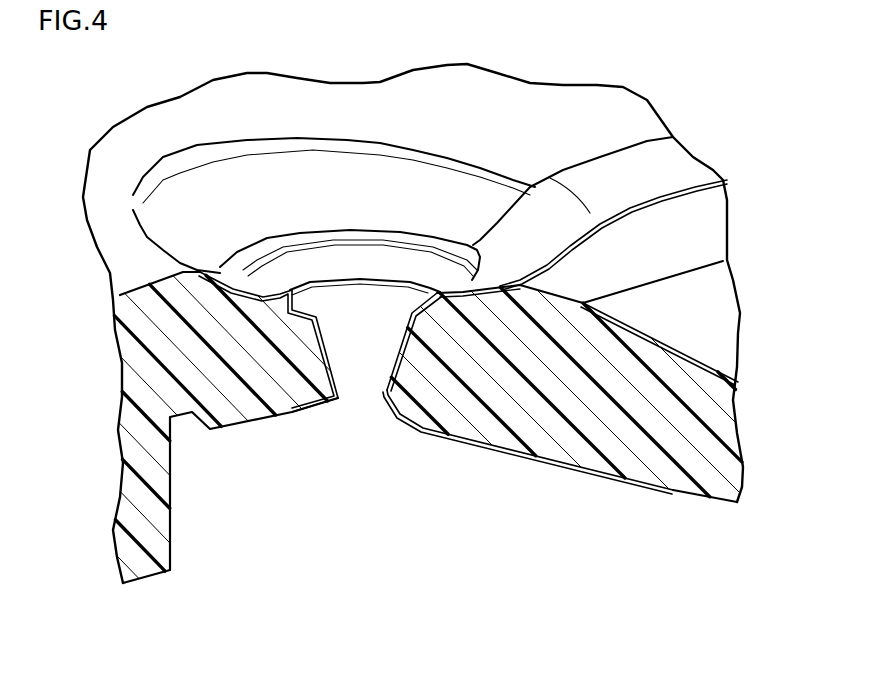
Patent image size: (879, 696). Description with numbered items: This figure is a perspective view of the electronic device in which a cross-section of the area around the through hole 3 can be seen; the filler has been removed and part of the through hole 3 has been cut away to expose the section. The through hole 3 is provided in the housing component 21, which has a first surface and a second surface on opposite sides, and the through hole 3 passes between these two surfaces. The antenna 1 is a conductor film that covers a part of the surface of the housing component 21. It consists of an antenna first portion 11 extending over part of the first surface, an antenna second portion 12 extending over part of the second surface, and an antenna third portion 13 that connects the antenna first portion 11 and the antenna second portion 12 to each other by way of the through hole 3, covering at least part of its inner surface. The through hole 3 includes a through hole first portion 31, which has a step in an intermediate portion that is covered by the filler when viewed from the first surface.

The antenna 1 is at (797, 212).
The antenna first portion 11 is at (645, 180).
The antenna second portion 12 is at (603, 480).
The antenna third portion 13 is at (407, 353).
The housing component 21 is at (143, 368).
The through hole 3 is at (378, 202).
The through hole first portion 31 is at (360, 367).